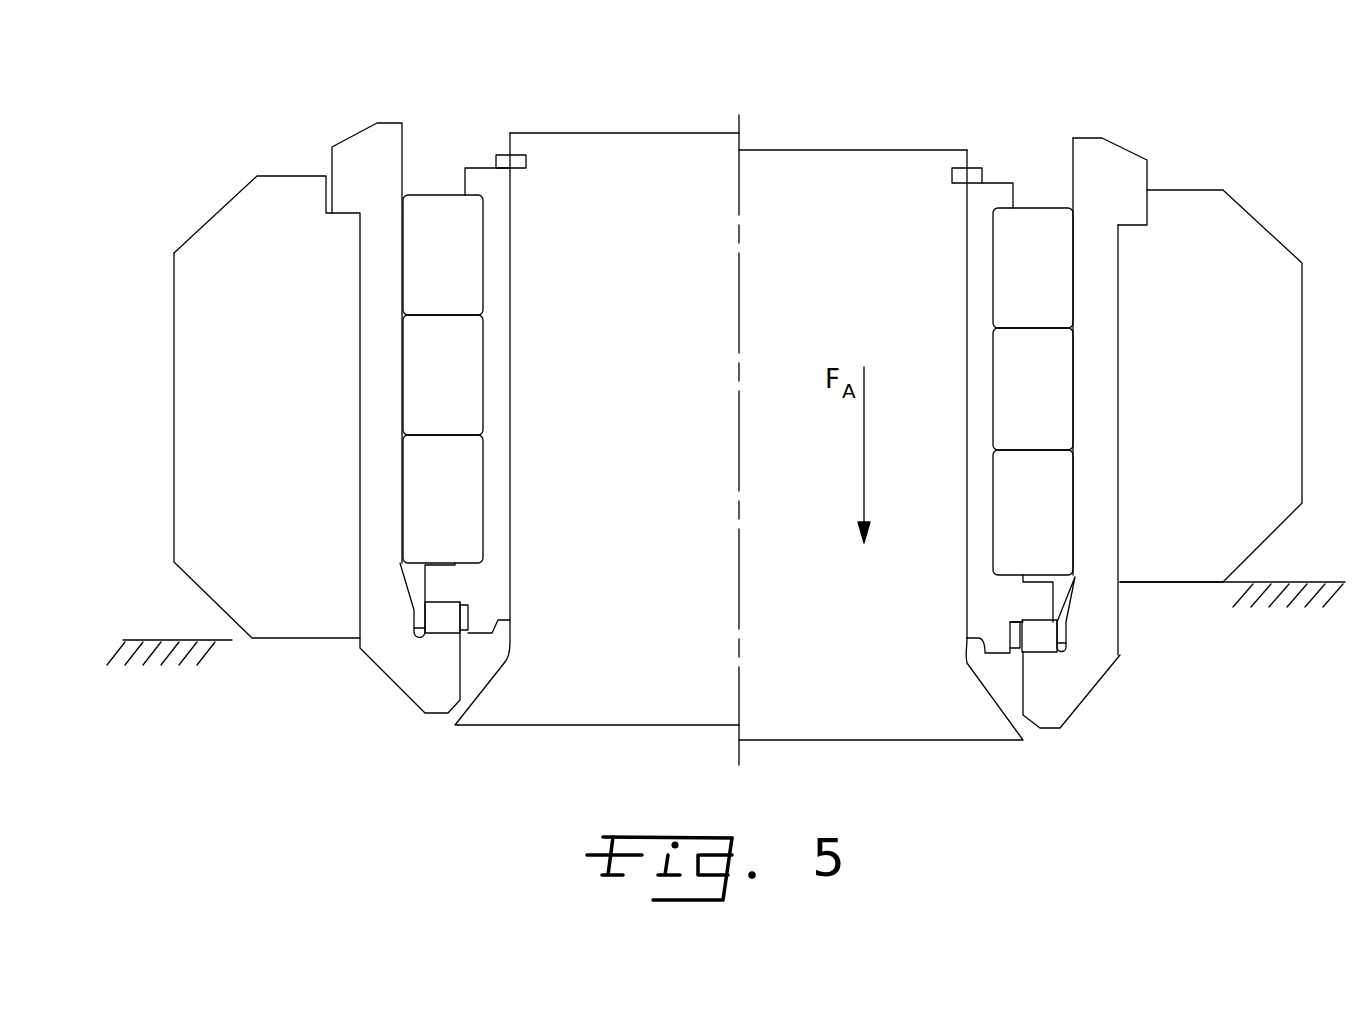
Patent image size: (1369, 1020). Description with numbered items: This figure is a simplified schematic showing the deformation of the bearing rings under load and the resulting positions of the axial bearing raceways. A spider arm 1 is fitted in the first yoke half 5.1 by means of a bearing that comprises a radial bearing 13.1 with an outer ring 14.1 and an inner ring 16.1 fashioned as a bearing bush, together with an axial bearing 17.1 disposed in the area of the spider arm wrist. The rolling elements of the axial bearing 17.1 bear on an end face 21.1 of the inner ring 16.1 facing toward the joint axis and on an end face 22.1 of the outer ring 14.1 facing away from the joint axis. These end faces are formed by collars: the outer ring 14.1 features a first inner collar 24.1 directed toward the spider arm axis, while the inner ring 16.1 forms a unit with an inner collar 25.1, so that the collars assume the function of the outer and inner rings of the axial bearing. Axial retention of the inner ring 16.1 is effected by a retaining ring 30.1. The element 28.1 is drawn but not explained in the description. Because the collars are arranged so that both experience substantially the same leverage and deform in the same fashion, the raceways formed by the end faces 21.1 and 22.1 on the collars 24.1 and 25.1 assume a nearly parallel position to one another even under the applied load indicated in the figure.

The spider arm 1 is at (641, 398).
The first yoke half 5.1 is at (1236, 284).
The radial bearing 13.1 is at (1000, 176).
The outer ring 14.1 is at (1103, 450).
The inner ring 16.1 is at (978, 458).
The axial bearing 17.1 is at (443, 614).
The end face 21.1 is at (1040, 630).
The end face 22.1 is at (1062, 650).
The first inner collar 24.1 is at (1062, 700).
The inner collar 25.1 is at (995, 612).
The flange arm 28.1 is at (1136, 194).
The retaining ring 30.1 is at (963, 172).